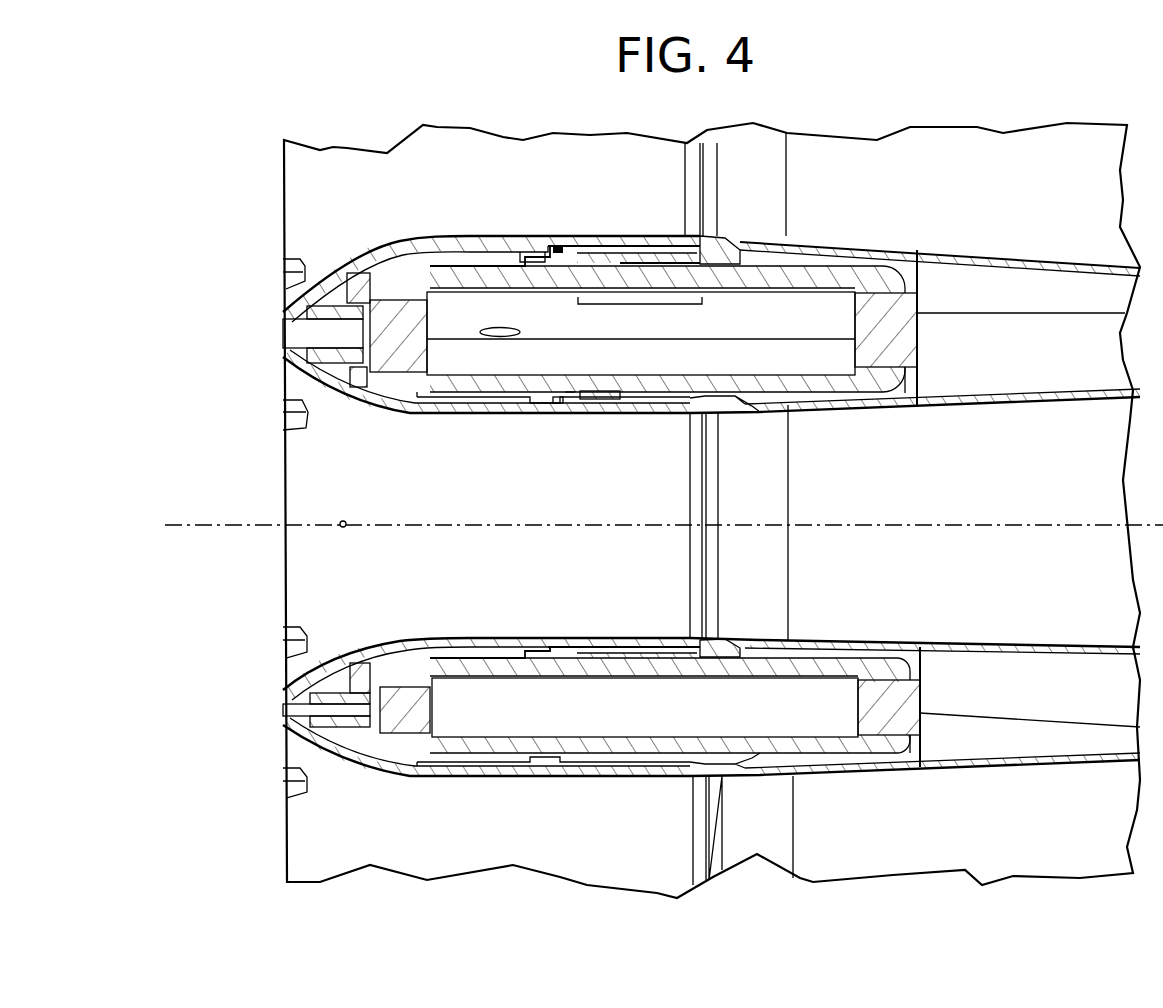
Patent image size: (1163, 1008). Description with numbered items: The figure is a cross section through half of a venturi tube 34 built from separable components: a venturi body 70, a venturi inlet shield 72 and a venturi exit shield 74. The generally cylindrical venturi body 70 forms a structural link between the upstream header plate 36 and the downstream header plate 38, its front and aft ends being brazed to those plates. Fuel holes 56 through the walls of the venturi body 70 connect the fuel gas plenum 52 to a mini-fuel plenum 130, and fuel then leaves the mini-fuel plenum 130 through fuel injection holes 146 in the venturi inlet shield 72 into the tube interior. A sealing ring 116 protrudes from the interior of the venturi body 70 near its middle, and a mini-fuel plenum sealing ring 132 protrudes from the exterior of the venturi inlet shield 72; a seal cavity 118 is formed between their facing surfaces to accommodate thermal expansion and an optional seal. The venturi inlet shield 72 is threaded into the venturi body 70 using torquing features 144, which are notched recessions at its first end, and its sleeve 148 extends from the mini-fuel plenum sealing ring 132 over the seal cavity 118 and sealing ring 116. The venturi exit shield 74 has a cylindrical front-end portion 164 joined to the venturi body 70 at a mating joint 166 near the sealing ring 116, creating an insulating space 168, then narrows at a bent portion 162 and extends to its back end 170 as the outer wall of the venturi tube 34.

The venturi tube 34 is at (350, 481).
The upstream header plate 36 is at (385, 326).
The downstream header plate 38 is at (905, 336).
The fuel gas plenum 52 is at (790, 318).
The fuel holes 56 is at (505, 328).
The venturi body 70 is at (483, 383).
The venturi inlet shield 72 is at (437, 413).
The venturi exit shield 74 is at (891, 404).
The sealing ring 116 is at (567, 393).
The seal cavity 118 is at (553, 404).
The mini-fuel plenum 130 is at (429, 265).
The mini-fuel plenum sealing ring 132 is at (541, 258).
The torquing features 144 is at (285, 410).
The fuel injection holes 146 is at (352, 686).
The sleeve 148 is at (697, 228).
The bent portion 162 is at (713, 244).
The front-end portion 164 is at (640, 304).
The mating joint 166 is at (598, 398).
The insulating space 168 is at (817, 397).
The back end 170 is at (1059, 264).